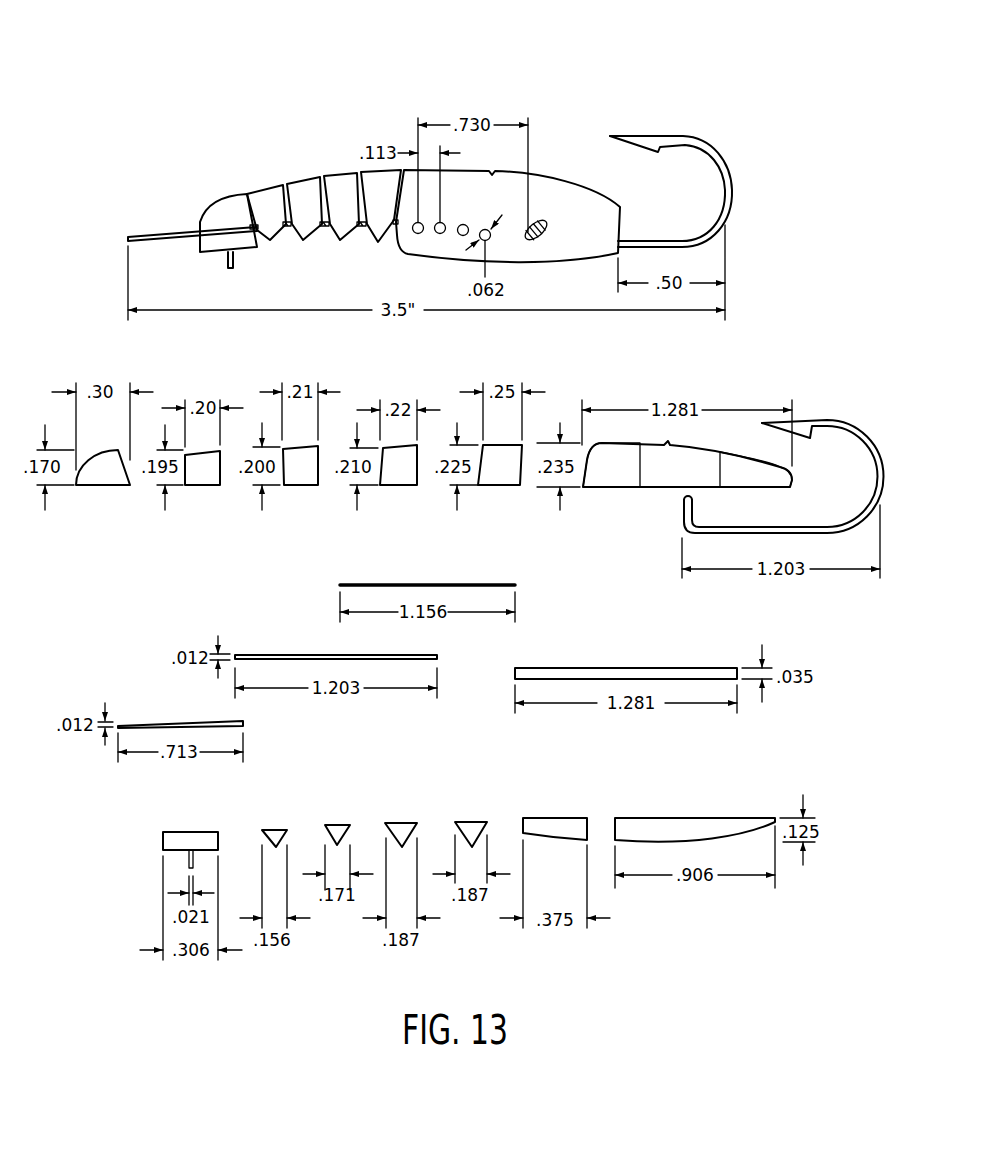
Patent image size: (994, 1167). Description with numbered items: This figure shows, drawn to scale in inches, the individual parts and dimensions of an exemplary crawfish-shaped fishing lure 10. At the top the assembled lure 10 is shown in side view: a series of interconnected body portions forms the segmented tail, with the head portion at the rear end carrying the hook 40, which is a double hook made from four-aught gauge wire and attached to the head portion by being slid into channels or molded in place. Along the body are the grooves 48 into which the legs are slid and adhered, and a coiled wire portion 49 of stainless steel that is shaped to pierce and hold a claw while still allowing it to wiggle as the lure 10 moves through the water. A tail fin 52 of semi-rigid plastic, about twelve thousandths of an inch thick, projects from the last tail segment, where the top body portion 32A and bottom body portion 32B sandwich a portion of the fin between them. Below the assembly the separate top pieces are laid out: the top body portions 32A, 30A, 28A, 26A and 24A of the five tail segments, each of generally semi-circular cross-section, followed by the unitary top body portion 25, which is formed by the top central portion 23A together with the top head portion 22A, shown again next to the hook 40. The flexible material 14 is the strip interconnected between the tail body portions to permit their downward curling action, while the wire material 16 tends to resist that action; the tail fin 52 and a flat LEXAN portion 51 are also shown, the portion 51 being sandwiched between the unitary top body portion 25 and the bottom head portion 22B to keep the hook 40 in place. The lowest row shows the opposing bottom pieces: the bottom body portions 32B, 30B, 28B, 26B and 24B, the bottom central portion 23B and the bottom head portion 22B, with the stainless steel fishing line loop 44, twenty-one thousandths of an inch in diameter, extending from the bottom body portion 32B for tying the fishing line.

The fishing lure 10 is at (705, 90).
The flexible material 14 is at (461, 583).
The wire material 16 is at (275, 653).
The top head portion 22A is at (742, 478).
The bottom head portion 22B is at (692, 825).
The top central portion 23A is at (608, 470).
The bottom central portion 23B is at (560, 822).
The top body portion 24A is at (507, 478).
The bottom body portion 24B is at (471, 821).
The unitary top body portion 25 is at (715, 458).
The top body portion 26A is at (405, 478).
The bottom body portion 26B is at (395, 822).
The top body portion 28A is at (300, 478).
The bottom body portion 28B is at (341, 823).
The top body portion 30A is at (207, 478).
The bottom body portion 30B is at (268, 828).
The top body portion 32A is at (105, 478).
The bottom body portion 32B is at (179, 838).
The hook 40 is at (725, 178).
The fishing line loop 44 is at (188, 858).
The grooves 48 is at (411, 233).
The coiled wire portions 49 is at (544, 218).
The portion 51 is at (643, 672).
The tail fin 52 is at (163, 236).